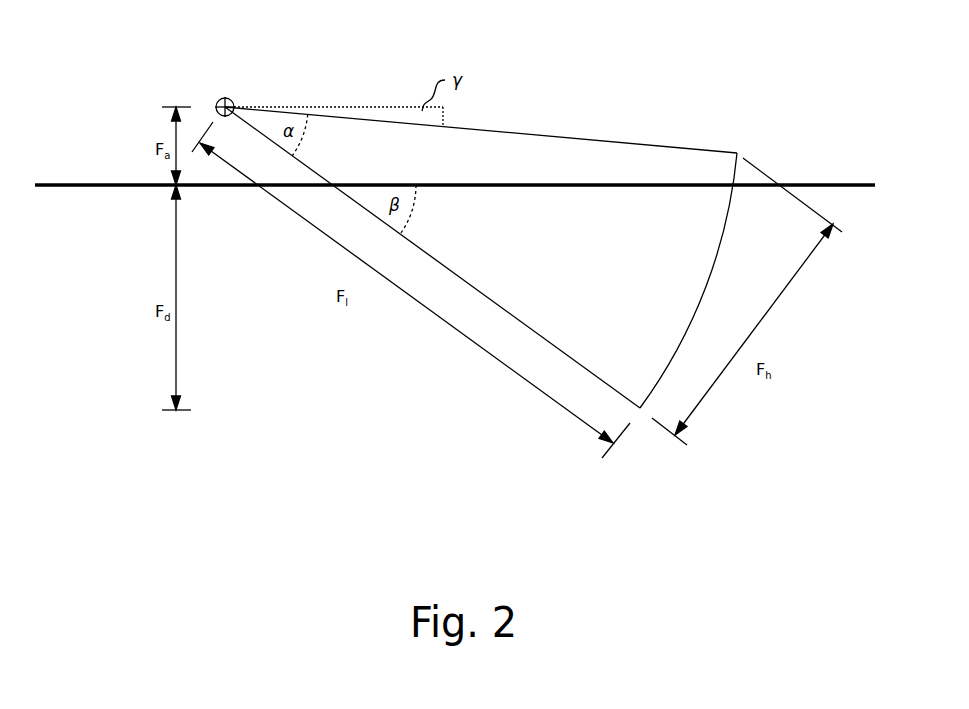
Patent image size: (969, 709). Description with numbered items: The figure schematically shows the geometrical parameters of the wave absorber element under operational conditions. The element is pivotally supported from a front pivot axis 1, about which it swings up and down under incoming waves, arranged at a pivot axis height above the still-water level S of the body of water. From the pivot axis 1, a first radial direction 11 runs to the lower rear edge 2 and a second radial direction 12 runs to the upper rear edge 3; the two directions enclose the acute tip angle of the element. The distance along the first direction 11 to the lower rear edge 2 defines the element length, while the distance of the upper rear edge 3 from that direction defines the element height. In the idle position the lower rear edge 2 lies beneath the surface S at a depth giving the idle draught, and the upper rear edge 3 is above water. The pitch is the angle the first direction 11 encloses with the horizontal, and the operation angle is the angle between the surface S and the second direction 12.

The front pivot axis 1 is at (225, 97).
The lower rear edge 2 is at (640, 408).
The upper rear edge 3 is at (737, 153).
The first radial direction 11 is at (535, 332).
The second radial direction 12 is at (627, 143).
The level of the water surface S is at (75, 182).